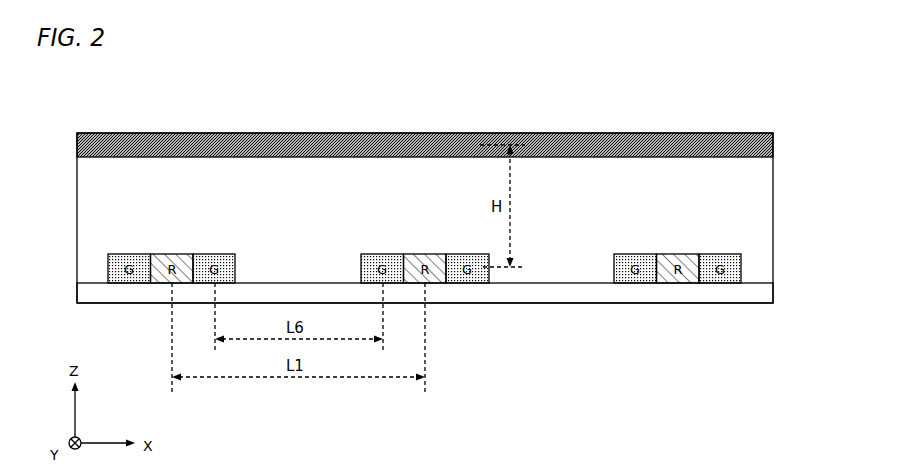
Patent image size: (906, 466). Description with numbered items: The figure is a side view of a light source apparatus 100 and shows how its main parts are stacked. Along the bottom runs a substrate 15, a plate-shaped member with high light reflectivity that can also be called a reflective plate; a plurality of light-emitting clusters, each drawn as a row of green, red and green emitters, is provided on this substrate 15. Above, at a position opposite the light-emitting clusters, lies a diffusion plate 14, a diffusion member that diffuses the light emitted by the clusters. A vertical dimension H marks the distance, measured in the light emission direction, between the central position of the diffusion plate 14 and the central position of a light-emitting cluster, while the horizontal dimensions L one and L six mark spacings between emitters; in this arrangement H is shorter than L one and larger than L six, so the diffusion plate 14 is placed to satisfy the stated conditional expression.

The display device 100 is at (710, 118).
The diffusion plate 14 is at (675, 147).
The substrate 15 is at (668, 292).